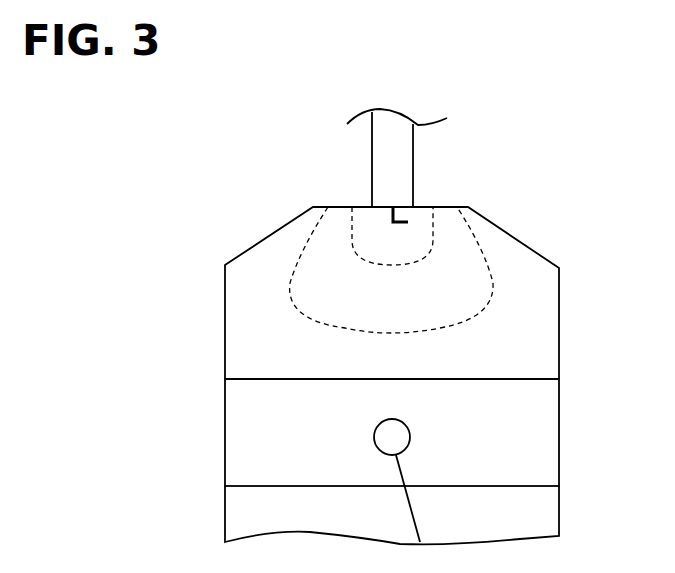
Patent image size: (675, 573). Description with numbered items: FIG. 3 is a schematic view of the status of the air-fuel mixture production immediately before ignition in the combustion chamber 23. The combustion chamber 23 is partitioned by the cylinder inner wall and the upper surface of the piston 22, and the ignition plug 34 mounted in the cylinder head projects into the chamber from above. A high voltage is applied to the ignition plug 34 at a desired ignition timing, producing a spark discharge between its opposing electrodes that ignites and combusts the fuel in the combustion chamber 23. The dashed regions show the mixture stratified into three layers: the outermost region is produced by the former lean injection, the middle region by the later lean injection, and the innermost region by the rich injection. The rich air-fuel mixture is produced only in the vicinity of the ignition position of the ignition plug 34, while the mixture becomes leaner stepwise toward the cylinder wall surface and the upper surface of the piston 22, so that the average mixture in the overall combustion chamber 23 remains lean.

The ignition plug 34 is at (414, 163).
The combustion chamber 23 is at (555, 333).
The piston 22 is at (555, 440).